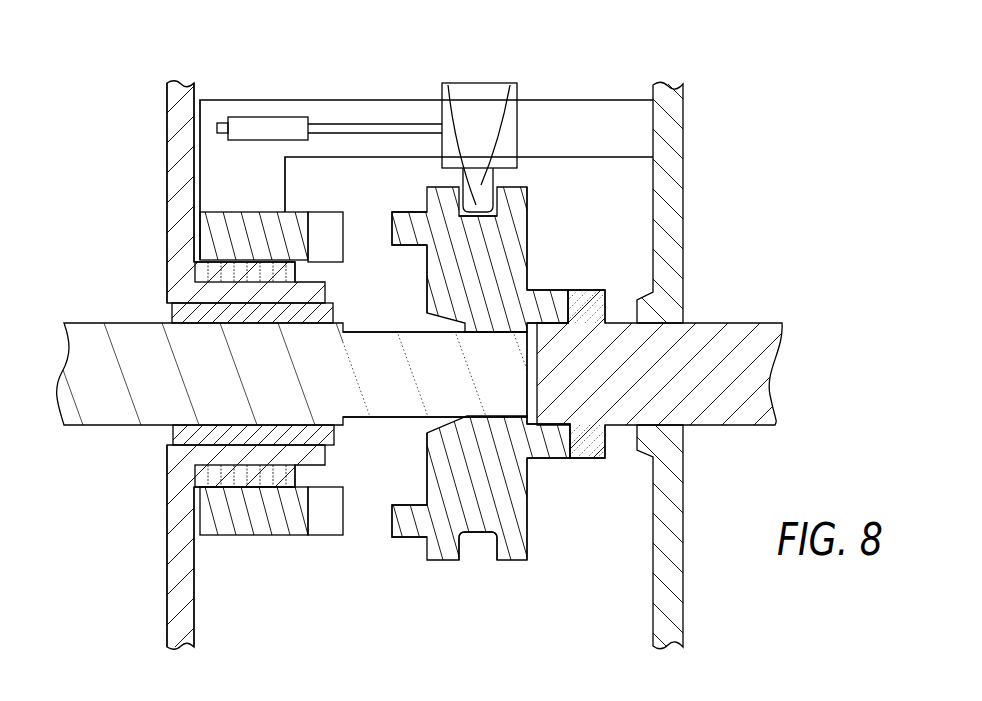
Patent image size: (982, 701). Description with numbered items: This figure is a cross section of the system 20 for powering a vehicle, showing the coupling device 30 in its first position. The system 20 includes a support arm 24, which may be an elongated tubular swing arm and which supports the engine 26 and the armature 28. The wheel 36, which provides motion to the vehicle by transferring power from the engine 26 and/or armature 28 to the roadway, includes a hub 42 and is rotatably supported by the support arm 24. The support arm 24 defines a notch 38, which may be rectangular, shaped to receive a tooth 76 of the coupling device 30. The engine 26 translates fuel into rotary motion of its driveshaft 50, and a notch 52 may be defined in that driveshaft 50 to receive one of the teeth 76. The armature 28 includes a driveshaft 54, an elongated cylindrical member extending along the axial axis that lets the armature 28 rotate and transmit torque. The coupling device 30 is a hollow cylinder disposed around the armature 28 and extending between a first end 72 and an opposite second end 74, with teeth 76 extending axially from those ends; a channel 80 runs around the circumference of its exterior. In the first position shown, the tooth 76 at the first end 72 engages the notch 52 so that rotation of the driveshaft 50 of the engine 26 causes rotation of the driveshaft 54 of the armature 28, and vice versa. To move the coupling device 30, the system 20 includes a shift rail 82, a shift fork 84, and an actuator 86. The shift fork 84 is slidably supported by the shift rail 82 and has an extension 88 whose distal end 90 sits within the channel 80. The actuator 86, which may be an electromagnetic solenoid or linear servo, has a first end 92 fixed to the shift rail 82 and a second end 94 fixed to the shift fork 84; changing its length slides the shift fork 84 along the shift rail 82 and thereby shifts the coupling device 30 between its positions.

The system 20 is at (623, 52).
The support arm 24 is at (235, 227).
The engine 26 is at (685, 228).
The armature 28 is at (107, 407).
The coupling device 30 is at (515, 210).
The wheel 36 is at (175, 165).
The notch 38 is at (328, 250).
The hub 42 is at (178, 228).
The driveshaft 50 is at (600, 400).
The notch 52 is at (560, 300).
The driveshaft 54 is at (388, 397).
The first end 72 is at (527, 236).
The second end 74 is at (427, 287).
The teeth 76 is at (412, 223).
The channel 80 is at (497, 205).
The shift rail 82 is at (262, 100).
The shift fork 84 is at (485, 100).
The actuator 86 is at (320, 127).
The extension 88 is at (500, 98).
The distal end 90 is at (453, 100).
The first end 92 is at (220, 122).
The second end 94 is at (440, 128).